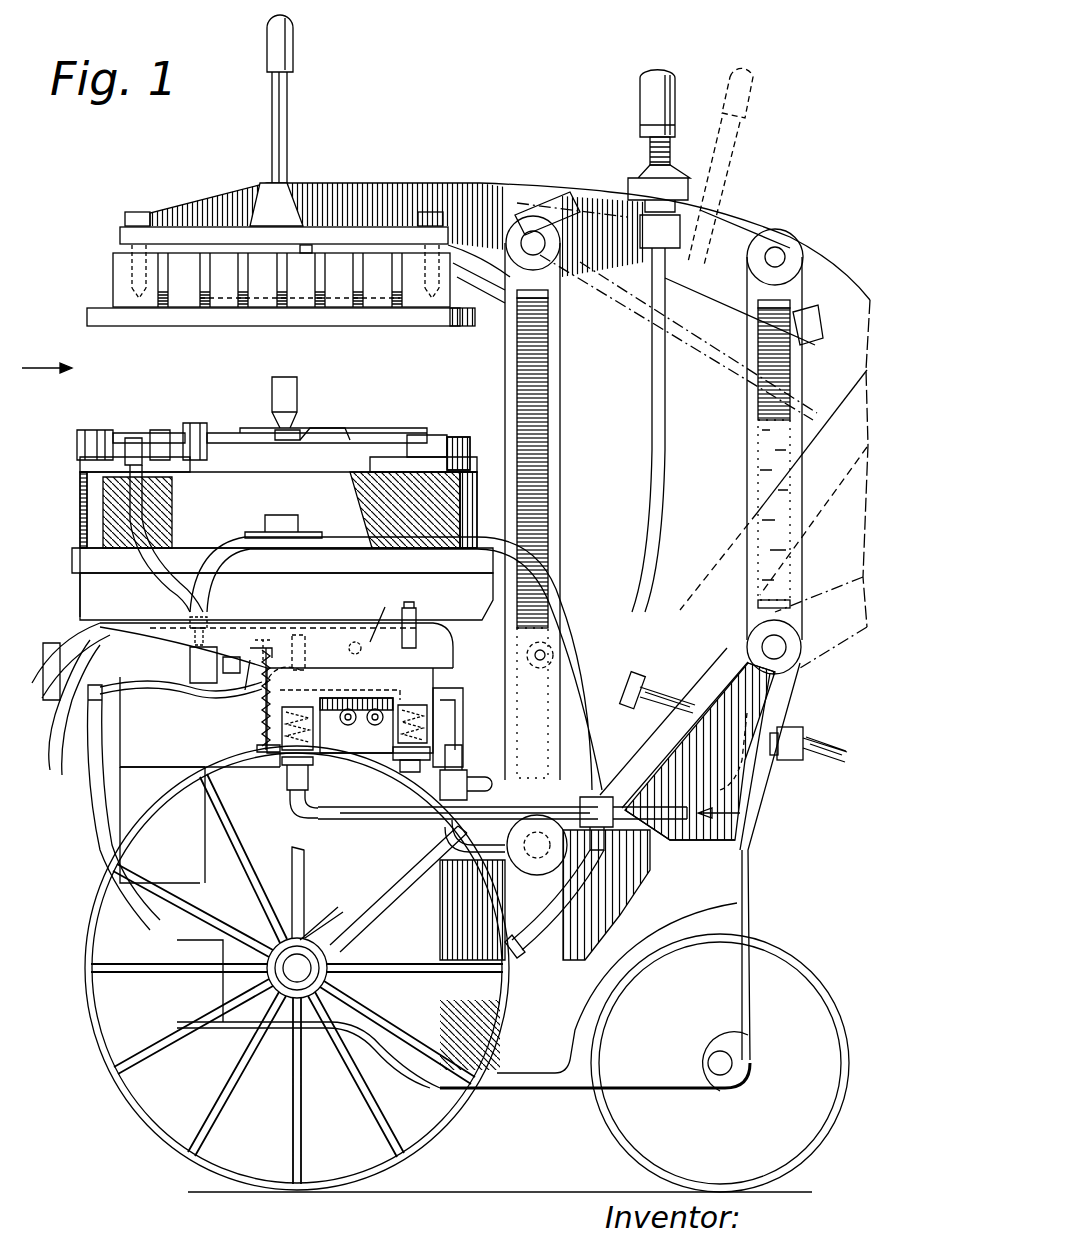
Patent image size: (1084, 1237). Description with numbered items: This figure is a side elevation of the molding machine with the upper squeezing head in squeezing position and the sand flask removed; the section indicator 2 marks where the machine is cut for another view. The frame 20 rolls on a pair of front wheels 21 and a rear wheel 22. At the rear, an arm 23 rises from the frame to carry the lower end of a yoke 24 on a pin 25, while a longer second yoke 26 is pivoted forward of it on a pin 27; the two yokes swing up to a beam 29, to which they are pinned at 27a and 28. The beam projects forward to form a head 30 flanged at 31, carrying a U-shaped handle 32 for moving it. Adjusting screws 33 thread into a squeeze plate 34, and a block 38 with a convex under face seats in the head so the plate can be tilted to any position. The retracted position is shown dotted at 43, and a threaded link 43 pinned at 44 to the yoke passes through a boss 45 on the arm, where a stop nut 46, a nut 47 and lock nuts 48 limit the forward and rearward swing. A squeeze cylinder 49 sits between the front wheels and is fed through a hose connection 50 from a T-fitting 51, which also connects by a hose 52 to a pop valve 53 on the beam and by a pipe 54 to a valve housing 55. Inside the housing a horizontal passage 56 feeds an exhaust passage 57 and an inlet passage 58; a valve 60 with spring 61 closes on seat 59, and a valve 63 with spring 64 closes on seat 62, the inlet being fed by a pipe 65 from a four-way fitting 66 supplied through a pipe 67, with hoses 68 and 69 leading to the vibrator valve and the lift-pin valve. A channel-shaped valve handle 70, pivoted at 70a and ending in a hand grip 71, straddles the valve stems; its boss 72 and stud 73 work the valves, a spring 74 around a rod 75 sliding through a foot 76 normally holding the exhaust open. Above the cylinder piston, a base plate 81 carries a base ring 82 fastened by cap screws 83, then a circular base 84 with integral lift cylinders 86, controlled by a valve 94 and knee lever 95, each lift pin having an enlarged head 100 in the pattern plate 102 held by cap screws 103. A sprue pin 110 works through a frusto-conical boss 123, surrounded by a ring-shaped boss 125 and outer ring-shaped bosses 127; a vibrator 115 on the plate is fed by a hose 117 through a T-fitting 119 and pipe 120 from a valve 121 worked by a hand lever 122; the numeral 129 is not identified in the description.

The section line 2 is at (47, 357).
The frame 20 is at (510, 1085).
The front wheels 21 is at (128, 1105).
The rear wheel 22 is at (610, 1145).
The arm 23 is at (753, 803).
The yoke 24 is at (800, 555).
The pin 25 is at (780, 652).
The second yoke 26 is at (563, 474).
The pin 27 is at (537, 858).
The pin 27a is at (788, 252).
The pin 28 is at (545, 255).
The beam 29 is at (740, 218).
The head 30 is at (222, 210).
The flange 31 is at (220, 235).
The U-shaped handle 32 is at (287, 40).
The adjusting screws 33 is at (138, 212).
The squeeze plate 34 is at (88, 308).
The block 38 is at (306, 248).
The threaded link 43 is at (755, 95).
The pin 44 is at (545, 652).
The boss 45 is at (755, 760).
The stop nut 46 is at (790, 740).
The nut 47 is at (638, 700).
The lock nuts 48 is at (640, 635).
The squeeze cylinder 49 is at (170, 785).
The hose connection 50 is at (380, 925).
The T-fitting 51 is at (445, 782).
The hose 52 is at (475, 853).
The pop valve 53 is at (650, 92).
The pipe 54 is at (450, 760).
The valve housing 55 is at (462, 722).
The horizontal passage 56 is at (345, 690).
The exhaust passage 57 is at (378, 735).
The inlet passage 58 is at (280, 708).
The valve seat 59 is at (430, 730).
The valve 60 is at (378, 633).
The spring 61 is at (392, 748).
The valve seat 62 is at (260, 730).
The valve 63 is at (300, 680).
The spring 64 is at (285, 770).
The pipe 65 is at (318, 820).
The four-way fitting 66 is at (608, 830).
The pipe 67 is at (660, 830).
The hose 68 is at (604, 755).
The hose 69 is at (583, 910).
The valve handle 70 is at (338, 640).
The pivot 70a is at (387, 612).
The hand grip 71 is at (35, 655).
The boss 72 is at (313, 648).
The stud 73 is at (420, 618).
The spring 74 is at (252, 680).
The rod 75 is at (258, 705).
The foot 76 is at (256, 752).
The base plate 81 is at (105, 590).
The base ring 82 is at (75, 560).
The cap screws 83 is at (282, 515).
The base 84 is at (165, 495).
The cylinders 86 is at (85, 468).
The valve 94 is at (75, 700).
The knee lever 95 is at (88, 760).
The head 100 is at (88, 455).
The pattern plate 102 is at (428, 430).
The cap screws 103 is at (450, 440).
The sprue pin 110 is at (298, 370).
The vibrator 115 is at (122, 435).
The hose 117 is at (132, 522).
The T-fitting 119 is at (262, 640).
The pipe 120 is at (222, 640).
The valve 121 is at (192, 660).
The hand lever 122 is at (152, 690).
The frusto-conical boss 123 is at (290, 430).
The ring-shaped boss 125 is at (320, 430).
The ring-shaped bosses 127 is at (380, 425).
The bracket 129 is at (272, 425).